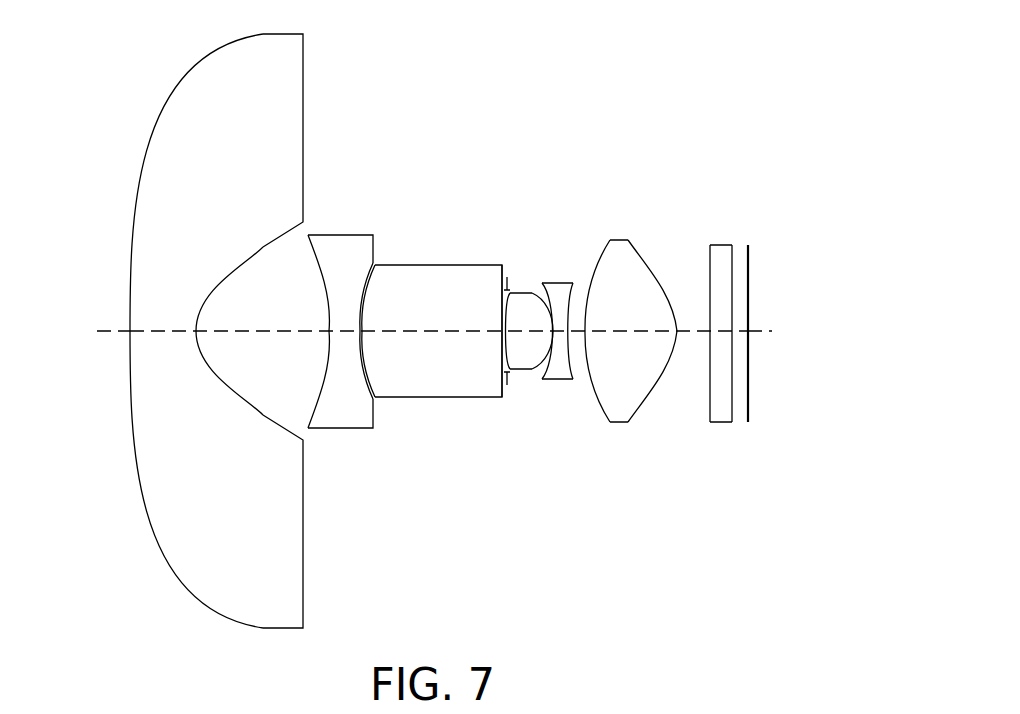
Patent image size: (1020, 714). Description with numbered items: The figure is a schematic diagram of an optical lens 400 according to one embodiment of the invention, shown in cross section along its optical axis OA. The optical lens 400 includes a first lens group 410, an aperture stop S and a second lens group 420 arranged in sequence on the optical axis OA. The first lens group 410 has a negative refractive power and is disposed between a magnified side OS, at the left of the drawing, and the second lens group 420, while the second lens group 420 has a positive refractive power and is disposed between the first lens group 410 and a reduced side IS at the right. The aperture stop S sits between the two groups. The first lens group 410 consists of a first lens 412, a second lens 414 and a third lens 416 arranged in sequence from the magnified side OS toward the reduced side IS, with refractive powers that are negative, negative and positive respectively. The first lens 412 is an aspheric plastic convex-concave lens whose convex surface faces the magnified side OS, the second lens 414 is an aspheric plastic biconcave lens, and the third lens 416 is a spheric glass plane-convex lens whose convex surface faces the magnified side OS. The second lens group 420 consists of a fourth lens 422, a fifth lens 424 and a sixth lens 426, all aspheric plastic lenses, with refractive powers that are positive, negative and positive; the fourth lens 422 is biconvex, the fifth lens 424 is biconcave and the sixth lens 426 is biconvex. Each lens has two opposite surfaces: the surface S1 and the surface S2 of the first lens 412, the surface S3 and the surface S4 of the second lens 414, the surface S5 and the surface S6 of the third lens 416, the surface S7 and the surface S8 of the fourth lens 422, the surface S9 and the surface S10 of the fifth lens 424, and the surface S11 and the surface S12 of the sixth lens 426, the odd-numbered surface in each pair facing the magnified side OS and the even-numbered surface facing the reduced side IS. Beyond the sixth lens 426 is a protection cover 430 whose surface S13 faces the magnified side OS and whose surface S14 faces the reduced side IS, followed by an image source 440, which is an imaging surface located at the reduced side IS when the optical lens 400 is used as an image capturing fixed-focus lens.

The optical lens 400 is at (800, 648).
The first lens group 410 is at (495, 577).
The first lens 412 is at (261, 331).
The second lens 414 is at (378, 378).
The third lens 416 is at (431, 361).
The second lens group 420 is at (637, 577).
The fourth lens 422 is at (515, 394).
The fifth lens 424 is at (557, 388).
The sixth lens 426 is at (631, 369).
The protection cover 430 is at (713, 333).
The image source 440 is at (748, 397).
The aperture stop S is at (507, 386).
The surface S1 is at (153, 125).
The surface S2 is at (266, 249).
The surface S3 is at (325, 298).
The surface S4 is at (368, 284).
The surface S5 is at (360, 317).
The surface S6 is at (505, 264).
The surface S7 is at (503, 320).
The surface S8 is at (543, 297).
The surface S9 is at (550, 322).
The surface S10 is at (572, 303).
The surface S11 is at (605, 245).
The surface S12 is at (657, 270).
The surface S13 is at (708, 277).
The surface S14 is at (733, 254).
The magnified side OS is at (96, 332).
The reduced side IS is at (774, 333).
The optical axis OA is at (103, 333).